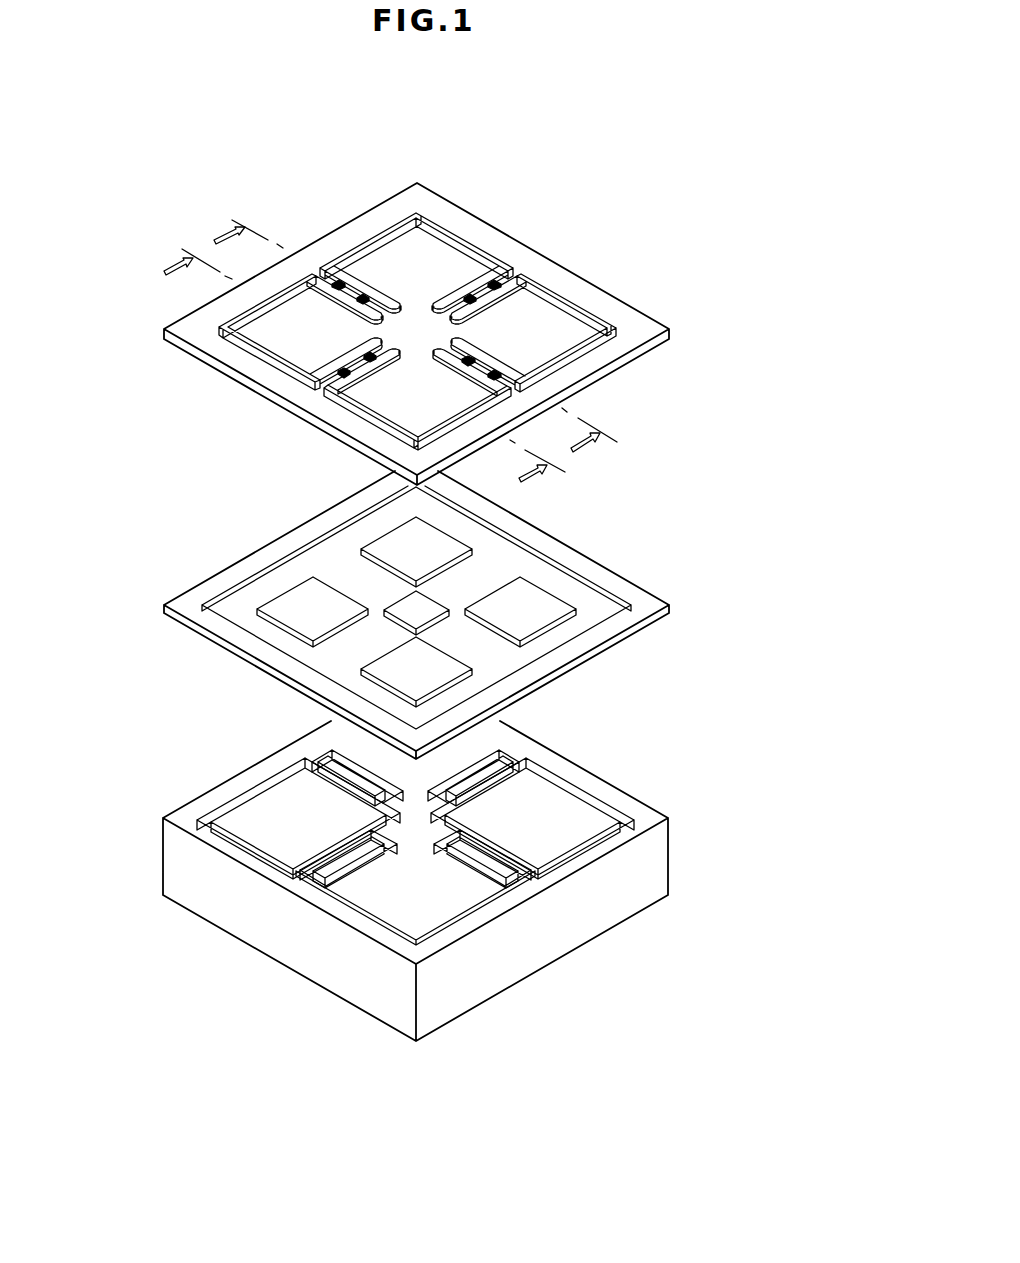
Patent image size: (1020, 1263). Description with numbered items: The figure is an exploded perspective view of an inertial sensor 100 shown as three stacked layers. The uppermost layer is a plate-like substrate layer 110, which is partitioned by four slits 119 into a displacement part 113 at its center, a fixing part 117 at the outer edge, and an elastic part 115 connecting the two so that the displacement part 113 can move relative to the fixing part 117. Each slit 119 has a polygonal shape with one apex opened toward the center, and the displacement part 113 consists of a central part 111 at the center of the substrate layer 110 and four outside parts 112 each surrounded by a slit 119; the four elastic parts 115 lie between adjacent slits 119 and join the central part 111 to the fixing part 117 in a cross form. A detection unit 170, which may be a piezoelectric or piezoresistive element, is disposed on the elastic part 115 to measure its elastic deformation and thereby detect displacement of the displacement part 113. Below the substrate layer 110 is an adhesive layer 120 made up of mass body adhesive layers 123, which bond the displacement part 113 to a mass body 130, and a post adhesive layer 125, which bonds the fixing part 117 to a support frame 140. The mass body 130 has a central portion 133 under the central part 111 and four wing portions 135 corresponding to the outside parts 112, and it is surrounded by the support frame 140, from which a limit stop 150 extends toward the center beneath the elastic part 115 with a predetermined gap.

The inertial sensor 100 is at (330, 107).
The substrate layer 110 is at (695, 198).
The central part 111 is at (421, 313).
The outside part 112 is at (432, 248).
The displacement part 113 is at (568, 181).
The elastic part 115 is at (488, 282).
The fixing part 117 is at (593, 295).
The slit 119 is at (572, 352).
The adhesive layer 120 is at (770, 547).
The mass body adhesive layer 123 is at (537, 600).
The post adhesive layer 125 is at (650, 607).
The mass body 130 is at (617, 1018).
The central portion 133 is at (417, 823).
The wing portion 135 is at (463, 890).
The support frame 140 is at (185, 862).
The limit stop 150 is at (343, 862).
The detection unit 170 is at (339, 284).